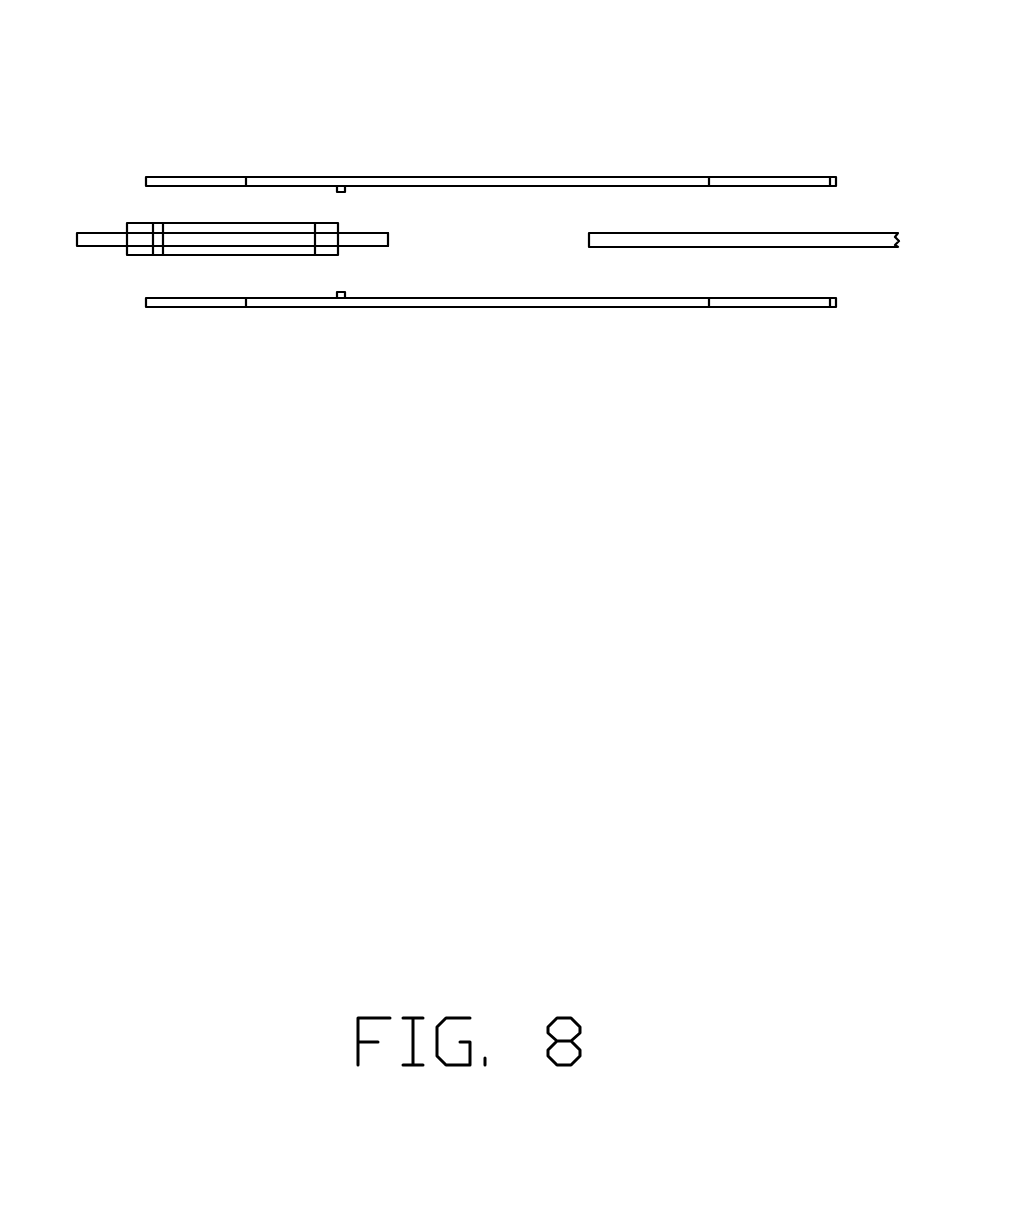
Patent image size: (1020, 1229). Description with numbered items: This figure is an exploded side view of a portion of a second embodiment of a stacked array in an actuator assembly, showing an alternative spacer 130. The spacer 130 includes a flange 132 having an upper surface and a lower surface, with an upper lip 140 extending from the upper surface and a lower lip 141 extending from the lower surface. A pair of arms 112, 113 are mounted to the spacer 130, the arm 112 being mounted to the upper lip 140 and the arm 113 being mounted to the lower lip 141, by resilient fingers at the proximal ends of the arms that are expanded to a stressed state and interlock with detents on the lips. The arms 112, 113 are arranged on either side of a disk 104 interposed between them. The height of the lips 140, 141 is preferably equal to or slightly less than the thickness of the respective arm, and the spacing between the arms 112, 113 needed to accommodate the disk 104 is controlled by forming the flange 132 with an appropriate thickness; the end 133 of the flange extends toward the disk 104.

The disk 104 is at (832, 236).
The arm 112 is at (491, 141).
The arm 113 is at (491, 335).
The spacer 130 is at (258, 206).
The flange 132 is at (260, 264).
The shaft end 133 is at (353, 239).
The upper lip 140 is at (197, 206).
The lower lip 141 is at (132, 255).